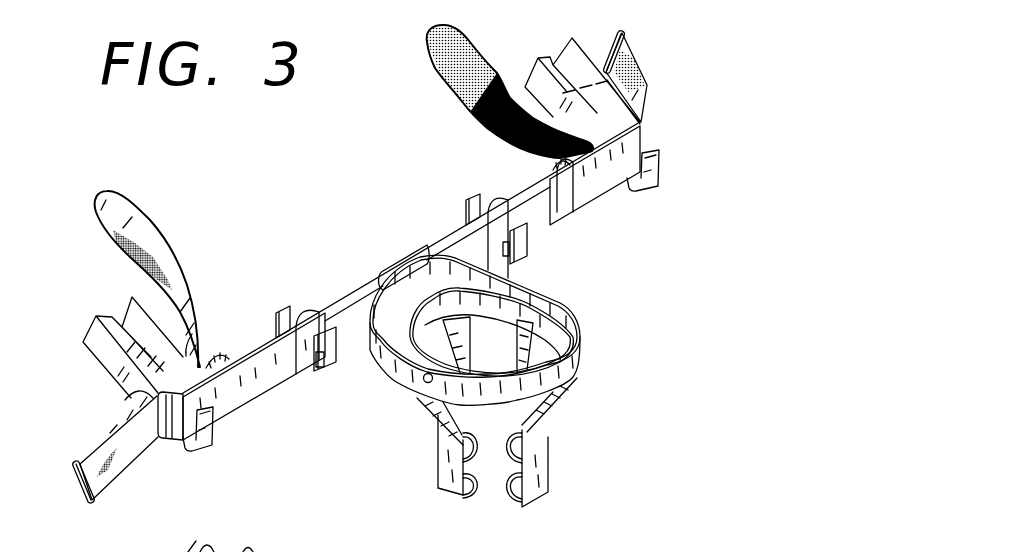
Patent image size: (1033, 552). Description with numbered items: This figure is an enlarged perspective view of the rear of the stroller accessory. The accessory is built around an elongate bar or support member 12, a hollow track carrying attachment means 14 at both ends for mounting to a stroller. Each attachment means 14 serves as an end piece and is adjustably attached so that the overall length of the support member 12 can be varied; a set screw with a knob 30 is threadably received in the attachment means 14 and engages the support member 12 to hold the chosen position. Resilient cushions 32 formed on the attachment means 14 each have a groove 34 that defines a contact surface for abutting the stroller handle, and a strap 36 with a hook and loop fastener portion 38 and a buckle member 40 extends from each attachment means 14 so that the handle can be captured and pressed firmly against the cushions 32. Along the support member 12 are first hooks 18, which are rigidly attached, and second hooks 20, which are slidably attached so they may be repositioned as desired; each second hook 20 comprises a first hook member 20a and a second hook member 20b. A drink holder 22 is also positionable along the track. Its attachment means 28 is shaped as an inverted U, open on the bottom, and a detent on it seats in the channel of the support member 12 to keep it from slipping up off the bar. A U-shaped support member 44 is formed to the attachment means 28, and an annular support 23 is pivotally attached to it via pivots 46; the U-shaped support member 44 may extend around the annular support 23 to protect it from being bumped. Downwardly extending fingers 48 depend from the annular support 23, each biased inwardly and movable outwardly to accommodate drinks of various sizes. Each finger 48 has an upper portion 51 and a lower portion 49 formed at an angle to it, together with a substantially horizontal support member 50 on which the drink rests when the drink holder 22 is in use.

The support member 12 is at (448, 233).
The attachment means 14 is at (243, 399).
The first hooks 18 is at (202, 440).
The second hooks 20 is at (301, 318).
The first hook member 20a is at (283, 312).
The second hook member 20b is at (329, 367).
The drink holder 22 is at (590, 378).
The annular support 23 is at (578, 332).
The attachment means of the drink holder 28 is at (410, 262).
The knob 30 is at (214, 356).
The resilient cushions 32 is at (93, 350).
The groove 34 is at (115, 313).
The strap 36 is at (188, 287).
The hook and loop fastener portion 38 is at (134, 200).
The buckle member 40 is at (76, 481).
The U-shaped support member 44 is at (398, 371).
The pivots 46 is at (426, 384).
The downwardly extending fingers 48 is at (437, 462).
The lower portion 49 is at (473, 494).
The horizontal support member 50 is at (466, 446).
The upper portion 51 is at (449, 357).